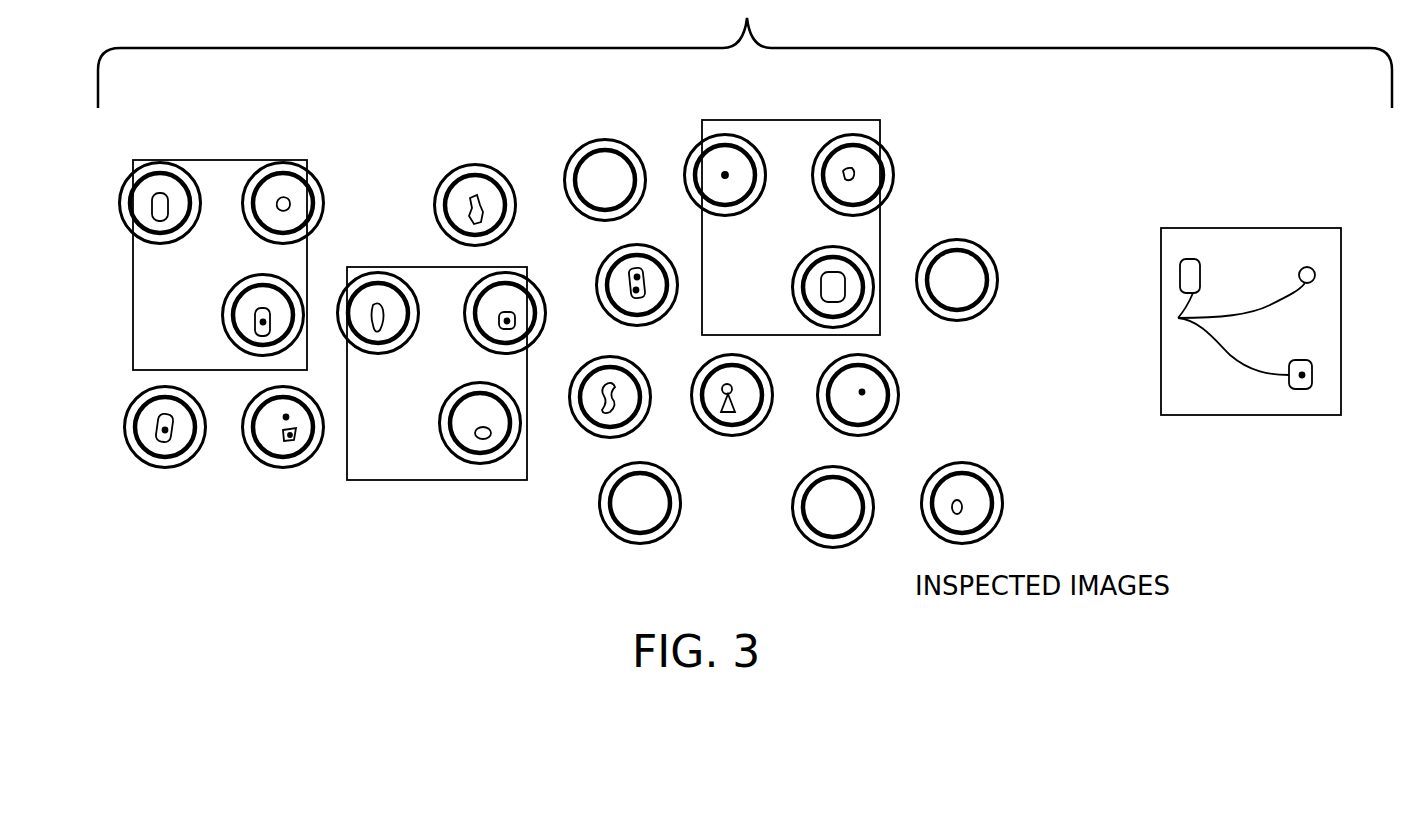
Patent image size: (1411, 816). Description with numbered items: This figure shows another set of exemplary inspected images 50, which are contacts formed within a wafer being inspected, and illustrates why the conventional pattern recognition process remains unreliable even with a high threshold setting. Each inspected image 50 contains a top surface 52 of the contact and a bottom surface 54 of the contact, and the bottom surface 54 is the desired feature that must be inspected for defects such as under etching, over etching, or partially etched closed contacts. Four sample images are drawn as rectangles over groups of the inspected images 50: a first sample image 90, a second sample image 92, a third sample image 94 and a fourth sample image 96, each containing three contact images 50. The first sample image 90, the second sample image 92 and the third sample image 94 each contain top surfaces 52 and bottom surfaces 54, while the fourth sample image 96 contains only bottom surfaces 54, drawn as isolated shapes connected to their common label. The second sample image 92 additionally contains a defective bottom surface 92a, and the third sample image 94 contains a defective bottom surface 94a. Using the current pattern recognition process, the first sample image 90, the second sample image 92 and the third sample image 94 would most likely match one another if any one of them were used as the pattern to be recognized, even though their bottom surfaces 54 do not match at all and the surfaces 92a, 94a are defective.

The inspected image 50 is at (314, 168).
The top surface 52 is at (320, 202).
The bottom surface 54 is at (292, 213).
The first sample image 90 is at (213, 160).
The second sample image 92 is at (362, 482).
The defective bottom surface 92a is at (483, 439).
The third sample image 94 is at (835, 120).
The defective bottom surface 94a is at (725, 175).
The fourth sample image 96 is at (1235, 228).